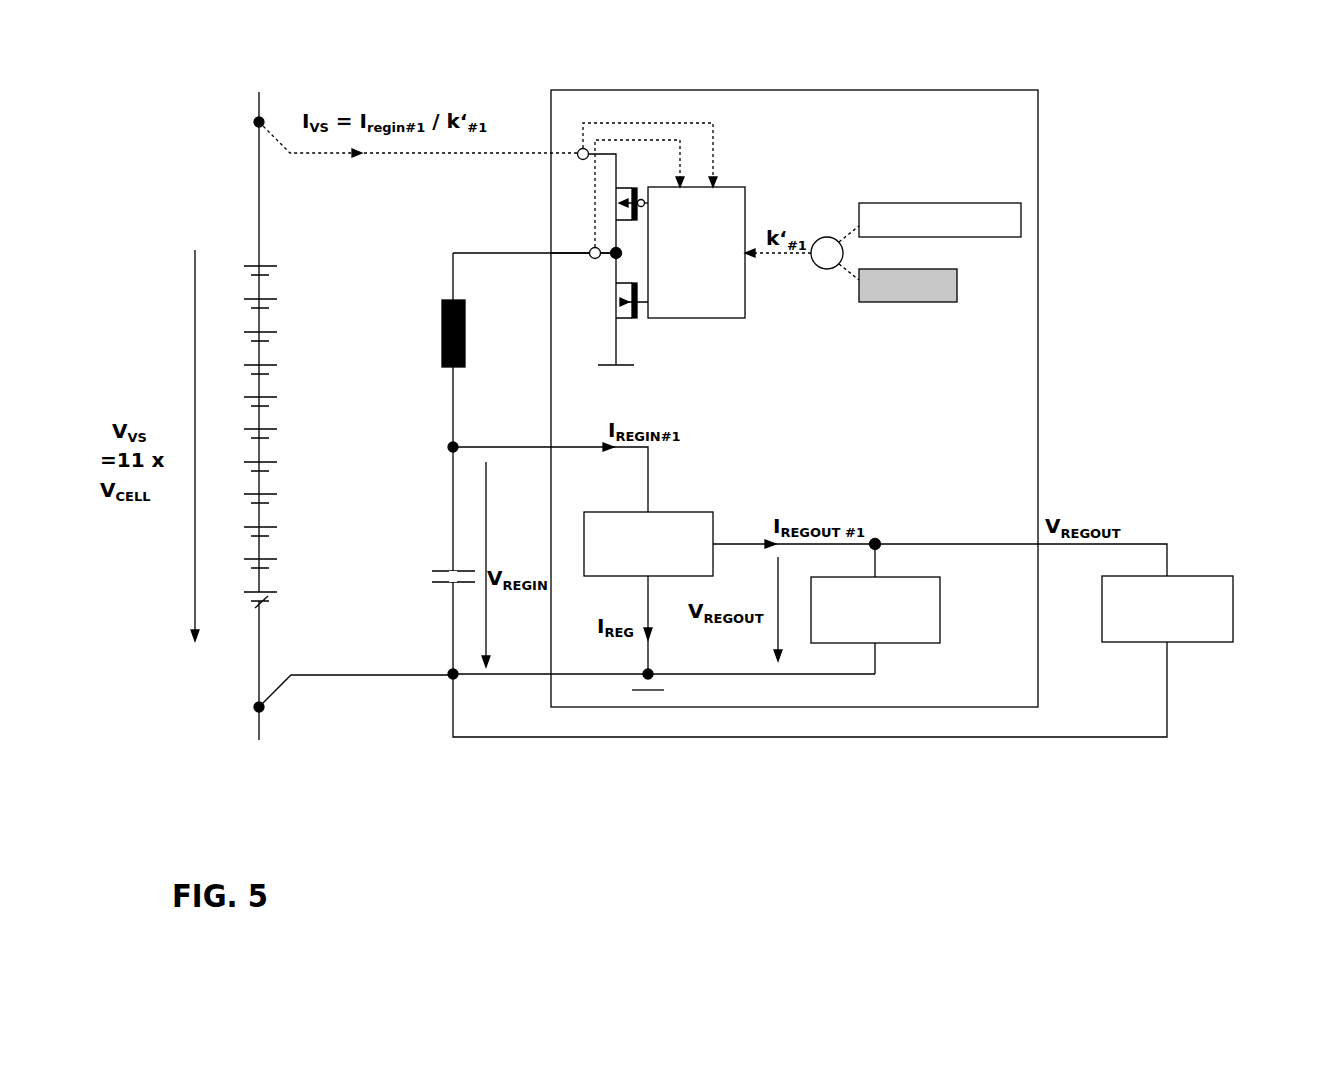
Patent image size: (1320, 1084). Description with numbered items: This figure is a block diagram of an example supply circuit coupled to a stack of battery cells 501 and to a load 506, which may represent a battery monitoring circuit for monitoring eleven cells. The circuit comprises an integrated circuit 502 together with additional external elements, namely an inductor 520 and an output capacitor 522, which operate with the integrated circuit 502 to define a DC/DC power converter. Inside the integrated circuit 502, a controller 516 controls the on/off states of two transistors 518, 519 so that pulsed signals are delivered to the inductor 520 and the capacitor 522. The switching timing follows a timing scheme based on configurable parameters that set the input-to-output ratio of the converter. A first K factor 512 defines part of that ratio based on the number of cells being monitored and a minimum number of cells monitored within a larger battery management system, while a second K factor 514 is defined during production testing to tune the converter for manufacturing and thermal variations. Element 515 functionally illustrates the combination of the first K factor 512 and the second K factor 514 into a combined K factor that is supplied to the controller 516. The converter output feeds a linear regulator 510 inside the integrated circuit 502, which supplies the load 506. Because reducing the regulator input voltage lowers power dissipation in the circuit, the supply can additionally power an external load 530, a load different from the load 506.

The battery cells 501 is at (289, 369).
The integrated circuit 502 is at (794, 398).
The load 506 is at (940, 615).
The linear regulator 510 is at (704, 512).
The first K factor 512 is at (917, 203).
The second K factor 514 is at (933, 302).
The element 515 is at (827, 237).
The controller 516 is at (695, 318).
The transistor 518 is at (614, 220).
The transistor 519 is at (614, 318).
The inductor 520 is at (453, 300).
The capacitor 522 is at (442, 567).
The external load 530 is at (1233, 592).